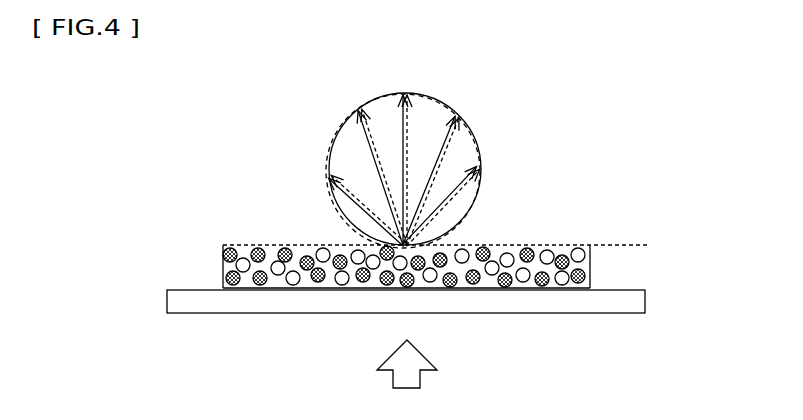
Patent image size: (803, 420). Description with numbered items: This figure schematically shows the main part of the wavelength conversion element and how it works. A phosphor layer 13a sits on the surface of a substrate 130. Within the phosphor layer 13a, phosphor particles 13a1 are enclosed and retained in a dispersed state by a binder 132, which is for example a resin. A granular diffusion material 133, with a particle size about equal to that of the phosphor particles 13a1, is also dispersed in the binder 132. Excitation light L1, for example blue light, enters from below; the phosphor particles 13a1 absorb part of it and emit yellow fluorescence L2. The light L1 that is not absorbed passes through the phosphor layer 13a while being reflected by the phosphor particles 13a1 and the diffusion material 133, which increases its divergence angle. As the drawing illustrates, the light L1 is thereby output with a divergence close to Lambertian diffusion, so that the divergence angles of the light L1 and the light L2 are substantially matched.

The substrate 130 is at (635, 299).
The phosphor layer 13a is at (655, 245).
The binder 132 is at (333, 283).
The diffusion material 133 is at (562, 278).
The phosphor particles 13a1 is at (490, 275).
The light L1 is at (453, 113).
The light L2 is at (478, 138).